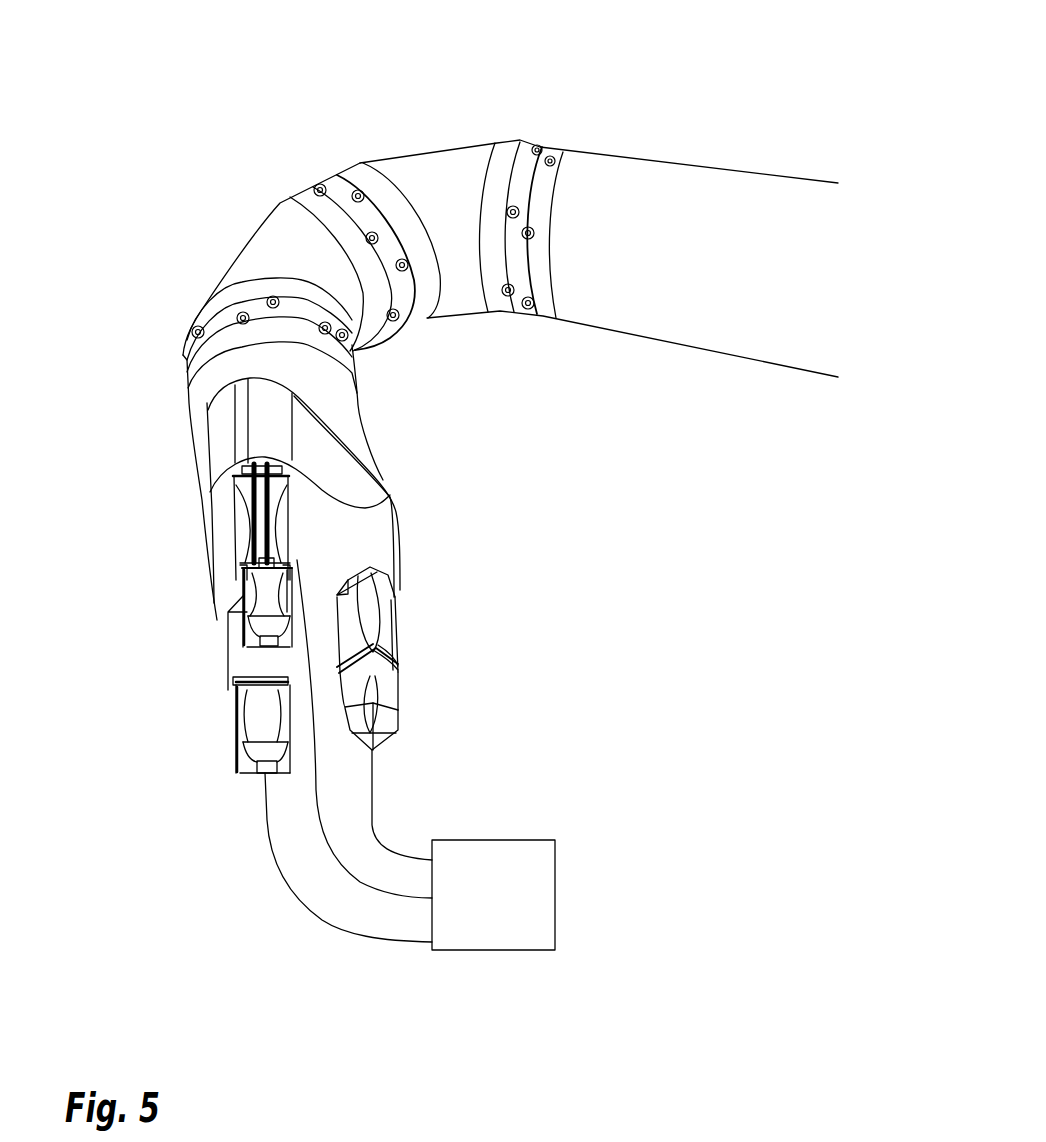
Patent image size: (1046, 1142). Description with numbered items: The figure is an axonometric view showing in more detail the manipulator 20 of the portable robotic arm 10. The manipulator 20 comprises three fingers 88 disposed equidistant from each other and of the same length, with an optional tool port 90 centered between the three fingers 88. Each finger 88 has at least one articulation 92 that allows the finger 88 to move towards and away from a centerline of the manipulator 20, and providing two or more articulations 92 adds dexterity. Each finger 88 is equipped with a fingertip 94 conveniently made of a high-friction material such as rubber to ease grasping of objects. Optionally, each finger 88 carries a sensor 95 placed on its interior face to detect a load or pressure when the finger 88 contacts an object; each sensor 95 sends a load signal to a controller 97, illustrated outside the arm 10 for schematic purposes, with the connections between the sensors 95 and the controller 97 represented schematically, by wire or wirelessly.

The portable robotic arm 10 is at (383, 100).
The manipulator 20 is at (350, 654).
The finger 88 is at (369, 708).
The tool port 90 is at (300, 566).
The articulation 92 is at (303, 548).
The fingertip 94 is at (300, 567).
The sensor 95 is at (383, 577).
The controller 97 is at (507, 905).